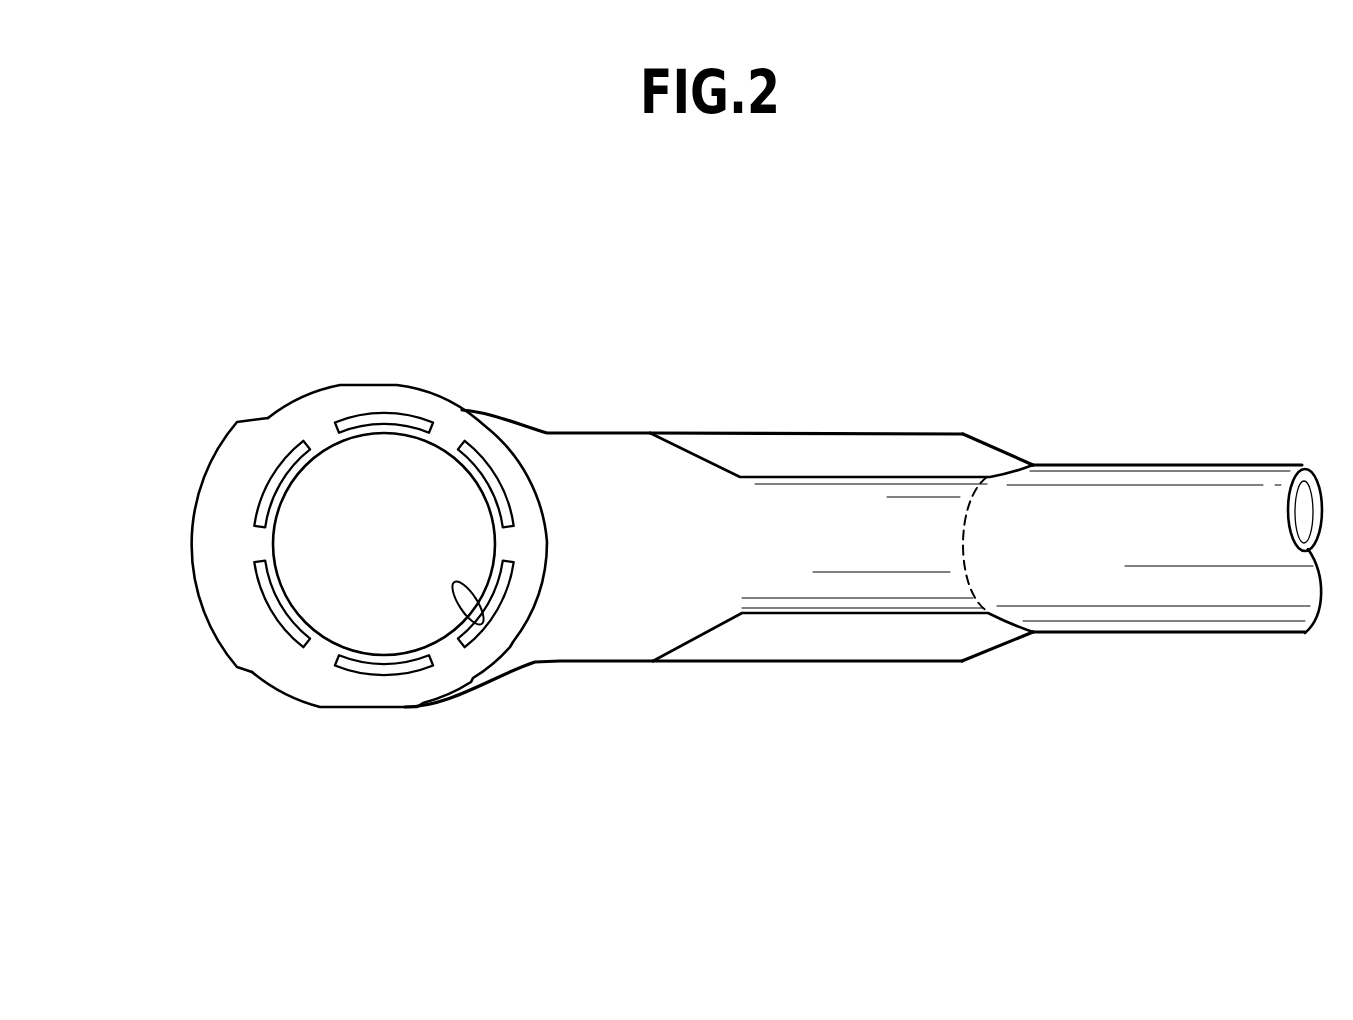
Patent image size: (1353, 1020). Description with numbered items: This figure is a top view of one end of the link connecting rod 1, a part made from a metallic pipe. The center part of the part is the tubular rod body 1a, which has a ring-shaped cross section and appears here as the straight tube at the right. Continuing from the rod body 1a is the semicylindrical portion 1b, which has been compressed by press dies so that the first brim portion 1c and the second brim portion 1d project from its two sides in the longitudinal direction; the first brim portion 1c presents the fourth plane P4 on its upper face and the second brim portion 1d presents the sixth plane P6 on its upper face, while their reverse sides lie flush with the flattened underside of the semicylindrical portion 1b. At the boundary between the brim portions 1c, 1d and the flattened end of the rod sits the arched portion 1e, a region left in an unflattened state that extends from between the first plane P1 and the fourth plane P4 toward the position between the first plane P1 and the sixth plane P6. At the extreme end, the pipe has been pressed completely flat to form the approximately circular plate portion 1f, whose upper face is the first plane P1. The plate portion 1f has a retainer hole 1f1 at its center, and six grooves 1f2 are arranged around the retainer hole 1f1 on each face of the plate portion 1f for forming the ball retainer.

The link connecting rod 1 is at (1201, 458).
The rod body 1a is at (1282, 635).
The semicylindrical portion 1b is at (848, 542).
The first brim portion 1c is at (943, 650).
The second brim portion 1d is at (958, 448).
The arched portion 1e is at (575, 502).
The plate portion 1f is at (337, 397).
The retainer hole 1f1 is at (480, 624).
The grooves 1f2 is at (290, 453).
The first plane P1 is at (233, 523).
The fourth plane P4 is at (812, 640).
The sixth plane P6 is at (823, 448).